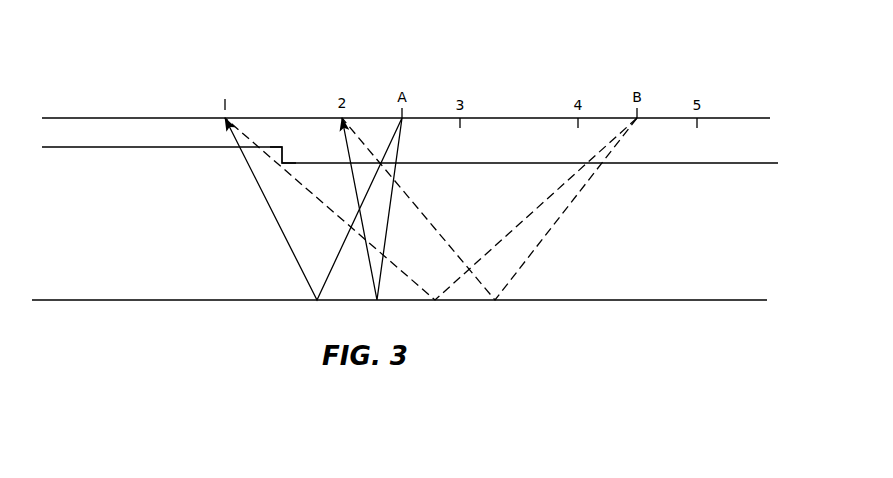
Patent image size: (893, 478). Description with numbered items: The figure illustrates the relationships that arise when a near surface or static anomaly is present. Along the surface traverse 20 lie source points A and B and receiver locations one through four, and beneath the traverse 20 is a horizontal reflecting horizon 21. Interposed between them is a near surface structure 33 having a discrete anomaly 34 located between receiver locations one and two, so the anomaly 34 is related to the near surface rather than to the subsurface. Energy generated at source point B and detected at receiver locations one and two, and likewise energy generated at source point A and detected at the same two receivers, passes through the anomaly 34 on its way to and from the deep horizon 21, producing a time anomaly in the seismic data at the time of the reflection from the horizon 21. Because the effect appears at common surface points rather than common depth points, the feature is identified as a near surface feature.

The traverse 20 is at (728, 118).
The near surface structure 33 is at (722, 164).
The anomaly 34 is at (284, 154).
The reflecting horizon 21 is at (698, 300).